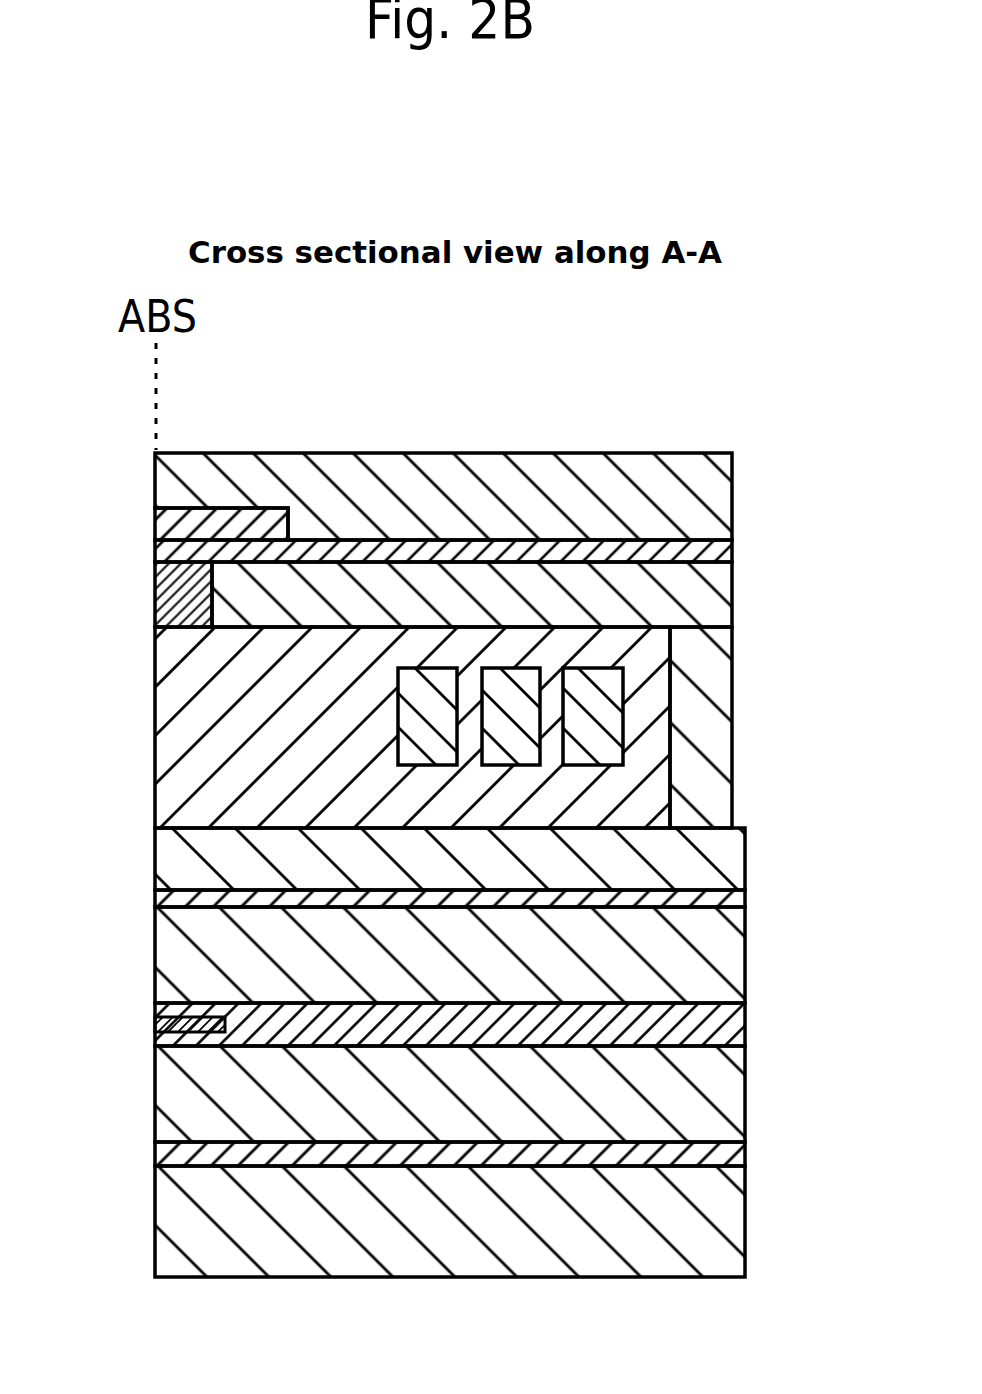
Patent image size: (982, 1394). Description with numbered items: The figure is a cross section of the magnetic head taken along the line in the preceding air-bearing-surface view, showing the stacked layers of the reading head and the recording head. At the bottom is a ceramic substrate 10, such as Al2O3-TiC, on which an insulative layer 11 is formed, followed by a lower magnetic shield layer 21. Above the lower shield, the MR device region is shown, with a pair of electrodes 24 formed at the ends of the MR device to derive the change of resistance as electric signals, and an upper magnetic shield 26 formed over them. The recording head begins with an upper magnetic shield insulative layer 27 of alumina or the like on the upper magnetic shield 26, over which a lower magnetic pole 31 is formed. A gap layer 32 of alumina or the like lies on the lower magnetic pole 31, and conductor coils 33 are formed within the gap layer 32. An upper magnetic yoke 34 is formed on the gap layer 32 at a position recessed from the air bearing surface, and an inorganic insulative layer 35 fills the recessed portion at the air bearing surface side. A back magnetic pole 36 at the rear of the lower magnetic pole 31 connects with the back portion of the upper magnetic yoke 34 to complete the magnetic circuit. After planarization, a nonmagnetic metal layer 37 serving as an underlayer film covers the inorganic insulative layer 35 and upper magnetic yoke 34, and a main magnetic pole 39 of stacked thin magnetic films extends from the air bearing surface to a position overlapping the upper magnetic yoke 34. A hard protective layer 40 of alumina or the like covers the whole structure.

The substrate 10 is at (165, 1224).
The insulative layer 11 is at (165, 1155).
The lower magnetic shield layer 21 is at (165, 1094).
The electrodes 24 is at (165, 1025).
The upper magnetic shield 26 is at (165, 967).
The upper magnetic shield insulative layer 27 is at (165, 900).
The lower magnetic pole 31 is at (165, 849).
The gap layer 32 is at (165, 732).
The conductor coils 33 is at (605, 713).
The upper magnetic yoke 34 is at (720, 603).
The inorganic insulative layer 35 is at (165, 601).
The back magnetic pole 36 is at (718, 783).
The nonmagnetic metal layer 37 is at (165, 554).
The main magnetic pole 39 is at (158, 528).
The hard protective layer 40 is at (158, 473).